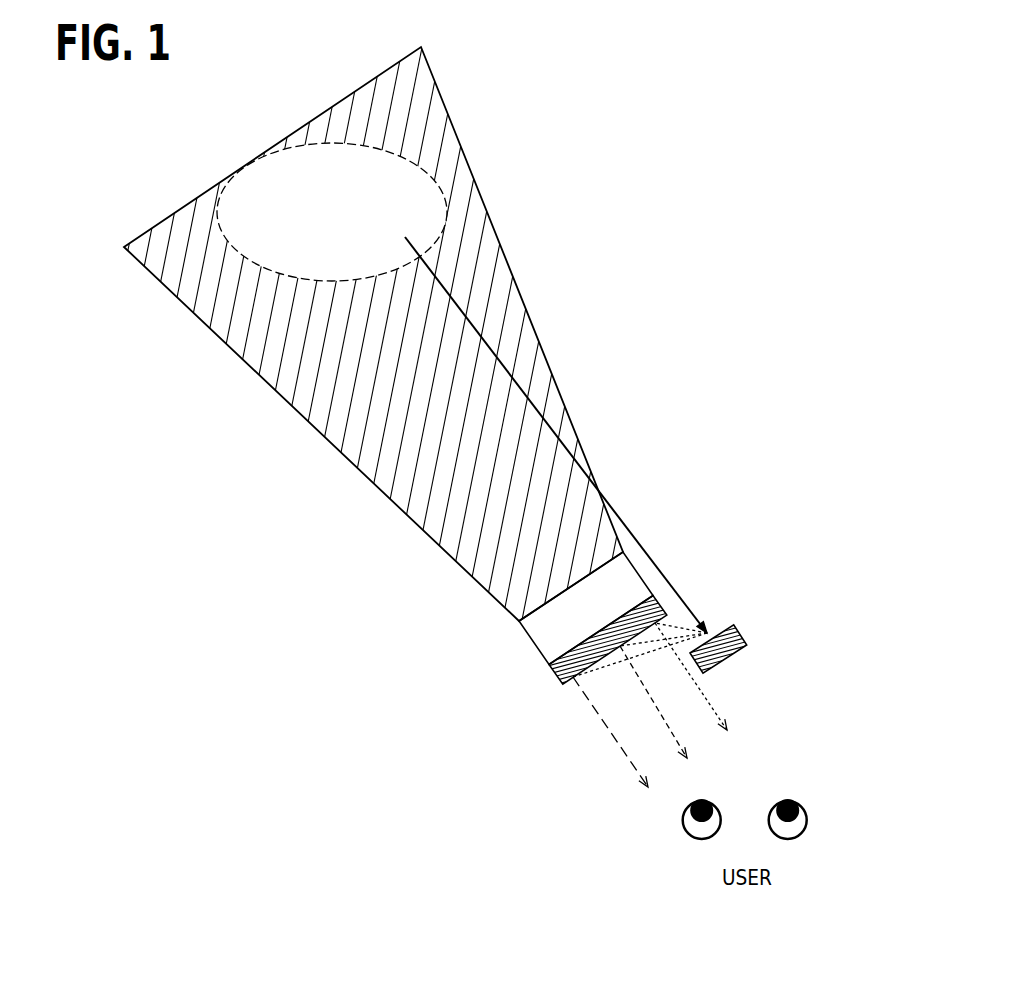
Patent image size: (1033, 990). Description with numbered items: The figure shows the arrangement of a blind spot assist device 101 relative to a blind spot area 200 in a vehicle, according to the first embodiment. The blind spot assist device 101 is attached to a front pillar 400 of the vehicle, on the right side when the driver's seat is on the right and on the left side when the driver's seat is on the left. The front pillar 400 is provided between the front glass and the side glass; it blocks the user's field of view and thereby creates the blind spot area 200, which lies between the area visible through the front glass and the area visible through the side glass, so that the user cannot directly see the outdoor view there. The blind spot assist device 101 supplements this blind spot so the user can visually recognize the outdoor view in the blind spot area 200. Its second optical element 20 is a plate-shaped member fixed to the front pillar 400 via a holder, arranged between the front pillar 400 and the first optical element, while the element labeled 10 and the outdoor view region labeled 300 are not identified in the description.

The display element (mirror) 10 is at (749, 632).
The second optical element 20 is at (549, 673).
The blind spot assist device 101 is at (745, 600).
The blind spot area 200 is at (497, 231).
The outdoor view region 300 is at (392, 177).
The front pillar 400 is at (518, 623).